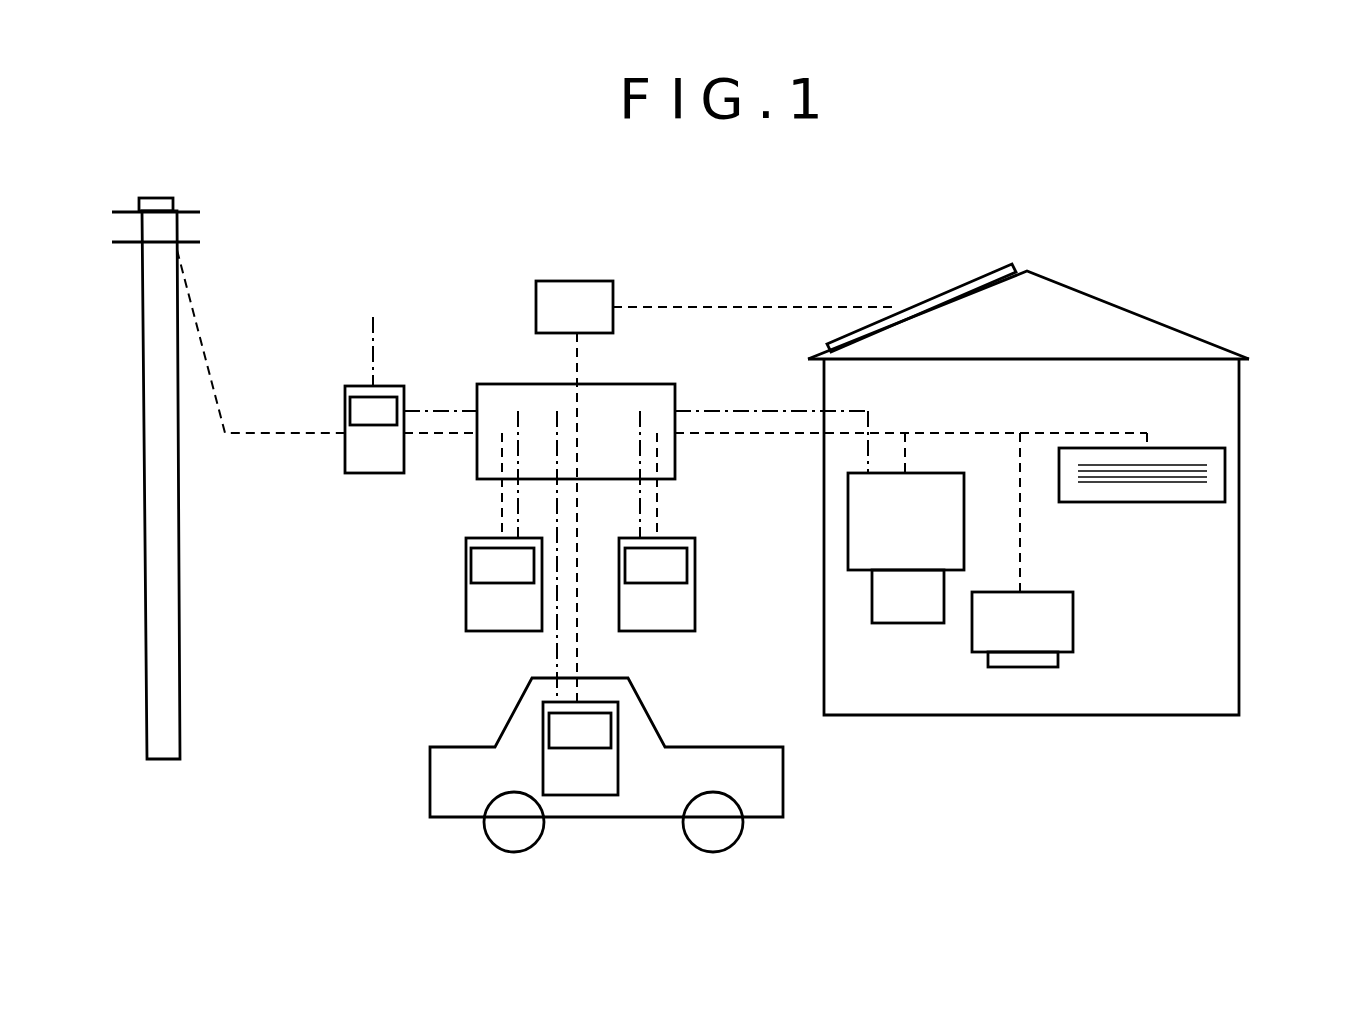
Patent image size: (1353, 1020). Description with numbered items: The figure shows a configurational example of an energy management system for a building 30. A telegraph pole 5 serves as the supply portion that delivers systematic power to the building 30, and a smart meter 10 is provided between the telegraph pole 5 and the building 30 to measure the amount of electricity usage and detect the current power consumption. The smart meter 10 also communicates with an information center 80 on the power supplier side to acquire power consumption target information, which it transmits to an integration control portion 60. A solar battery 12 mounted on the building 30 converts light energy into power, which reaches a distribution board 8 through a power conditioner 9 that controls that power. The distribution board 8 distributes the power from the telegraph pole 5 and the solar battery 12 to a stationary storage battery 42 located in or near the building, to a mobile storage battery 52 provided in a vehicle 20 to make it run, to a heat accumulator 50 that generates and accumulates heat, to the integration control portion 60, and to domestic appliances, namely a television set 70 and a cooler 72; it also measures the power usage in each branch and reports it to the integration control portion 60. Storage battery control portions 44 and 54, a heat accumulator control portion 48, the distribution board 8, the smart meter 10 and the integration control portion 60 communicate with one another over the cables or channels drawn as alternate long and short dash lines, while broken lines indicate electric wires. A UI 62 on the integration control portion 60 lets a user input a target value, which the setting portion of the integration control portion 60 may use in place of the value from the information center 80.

The telegraph pole 5 is at (160, 198).
The distribution board 8 is at (652, 384).
The power conditioner 9 is at (585, 281).
The smart meter 10 is at (345, 455).
The solar battery 12 is at (955, 287).
The vehicle 20 is at (430, 780).
The building 30 is at (1143, 317).
The storage battery 42 is at (466, 620).
The storage battery control portion 44 is at (471, 562).
The heat accumulator control portion 48 is at (673, 545).
The heat accumulator 50 is at (672, 631).
The storage battery 52 is at (543, 763).
The storage battery control portion 54 is at (611, 722).
The integration control portion 60 is at (848, 505).
The UI 62 is at (898, 623).
The television set 70 is at (1073, 618).
The cooler 72 is at (1225, 472).
The information center 80 is at (373, 334).